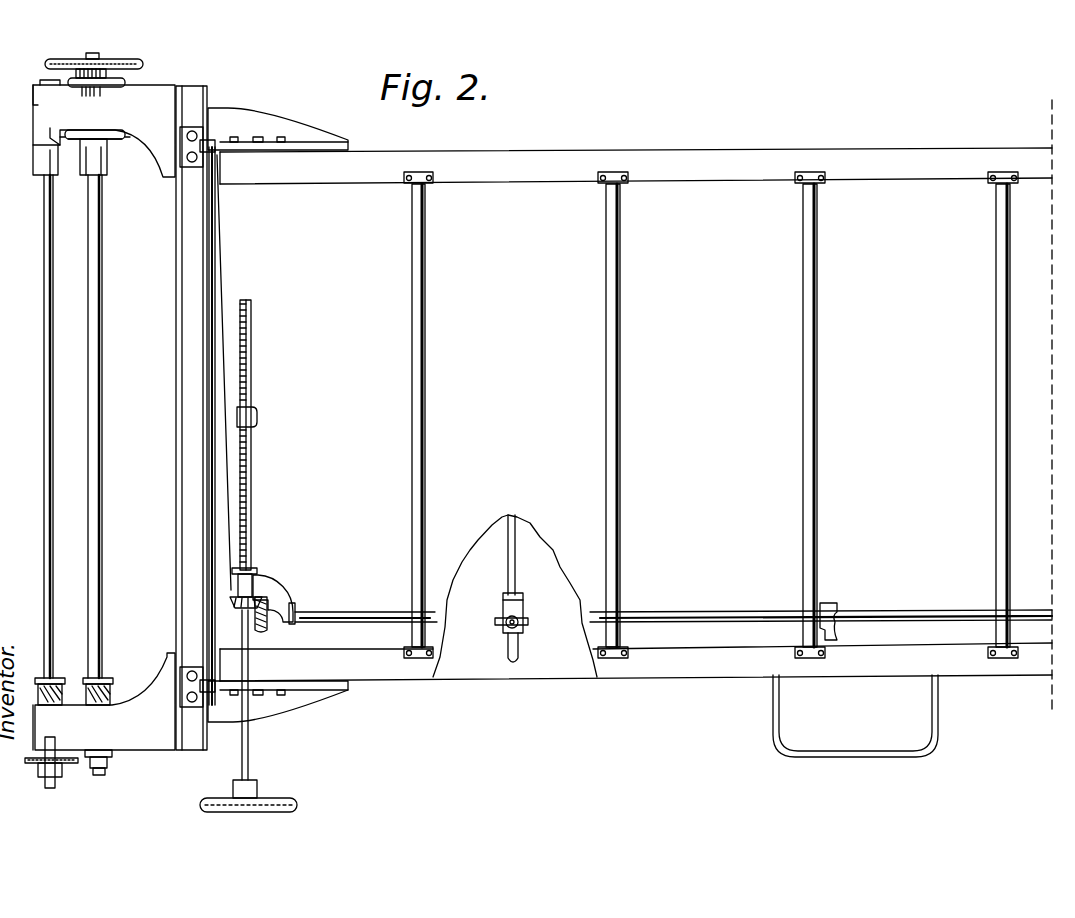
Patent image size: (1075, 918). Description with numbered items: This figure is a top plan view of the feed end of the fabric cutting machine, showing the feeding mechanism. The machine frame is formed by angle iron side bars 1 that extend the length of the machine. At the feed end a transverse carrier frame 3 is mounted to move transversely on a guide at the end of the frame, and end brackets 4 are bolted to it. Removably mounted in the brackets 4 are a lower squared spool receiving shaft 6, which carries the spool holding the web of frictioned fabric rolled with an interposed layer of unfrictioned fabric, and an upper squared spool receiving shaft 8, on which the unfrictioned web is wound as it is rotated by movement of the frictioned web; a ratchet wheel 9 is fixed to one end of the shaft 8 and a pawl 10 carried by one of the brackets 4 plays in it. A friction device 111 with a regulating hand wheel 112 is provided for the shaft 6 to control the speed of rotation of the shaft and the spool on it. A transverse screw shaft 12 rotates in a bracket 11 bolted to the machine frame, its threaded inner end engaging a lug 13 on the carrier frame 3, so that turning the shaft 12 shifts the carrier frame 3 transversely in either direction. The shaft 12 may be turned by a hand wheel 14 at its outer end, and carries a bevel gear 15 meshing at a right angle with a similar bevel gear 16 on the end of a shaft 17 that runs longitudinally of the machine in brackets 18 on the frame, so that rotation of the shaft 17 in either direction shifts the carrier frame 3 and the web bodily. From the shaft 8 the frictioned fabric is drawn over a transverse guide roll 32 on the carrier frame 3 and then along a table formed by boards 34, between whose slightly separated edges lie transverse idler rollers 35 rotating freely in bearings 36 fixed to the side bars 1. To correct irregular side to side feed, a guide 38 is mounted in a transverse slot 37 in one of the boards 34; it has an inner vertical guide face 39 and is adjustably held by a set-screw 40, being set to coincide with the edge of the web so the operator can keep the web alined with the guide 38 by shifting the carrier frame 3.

The angle iron side bars 1 is at (910, 170).
The carrier frame 3 is at (222, 300).
The end brackets 4 is at (145, 140).
The lower squared spool receiving shaft 6 is at (100, 298).
The upper squared spool receiving shaft 8 is at (40, 302).
The ratchet wheel 9 is at (32, 763).
The pawl 10 is at (62, 763).
The bracket 11 is at (280, 588).
The screw shaft 12 is at (252, 506).
The lug 13 is at (257, 416).
The hand wheel 14 is at (280, 798).
The bevel gear 15 is at (257, 597).
The bevel gear 16 is at (268, 632).
The shaft 17 is at (350, 606).
The brackets 18 is at (828, 600).
The guide roll 32 is at (204, 348).
The boards 34 is at (541, 546).
The idler rollers 35 is at (411, 388).
The bearings 36 is at (427, 170).
The transverse slot 37 is at (507, 559).
The guide 38 is at (503, 605).
The inner vertical guide face 39 is at (522, 598).
The set-screw 40 is at (520, 630).
The friction device 111 is at (102, 129).
The regulating hand wheel 112 is at (128, 60).